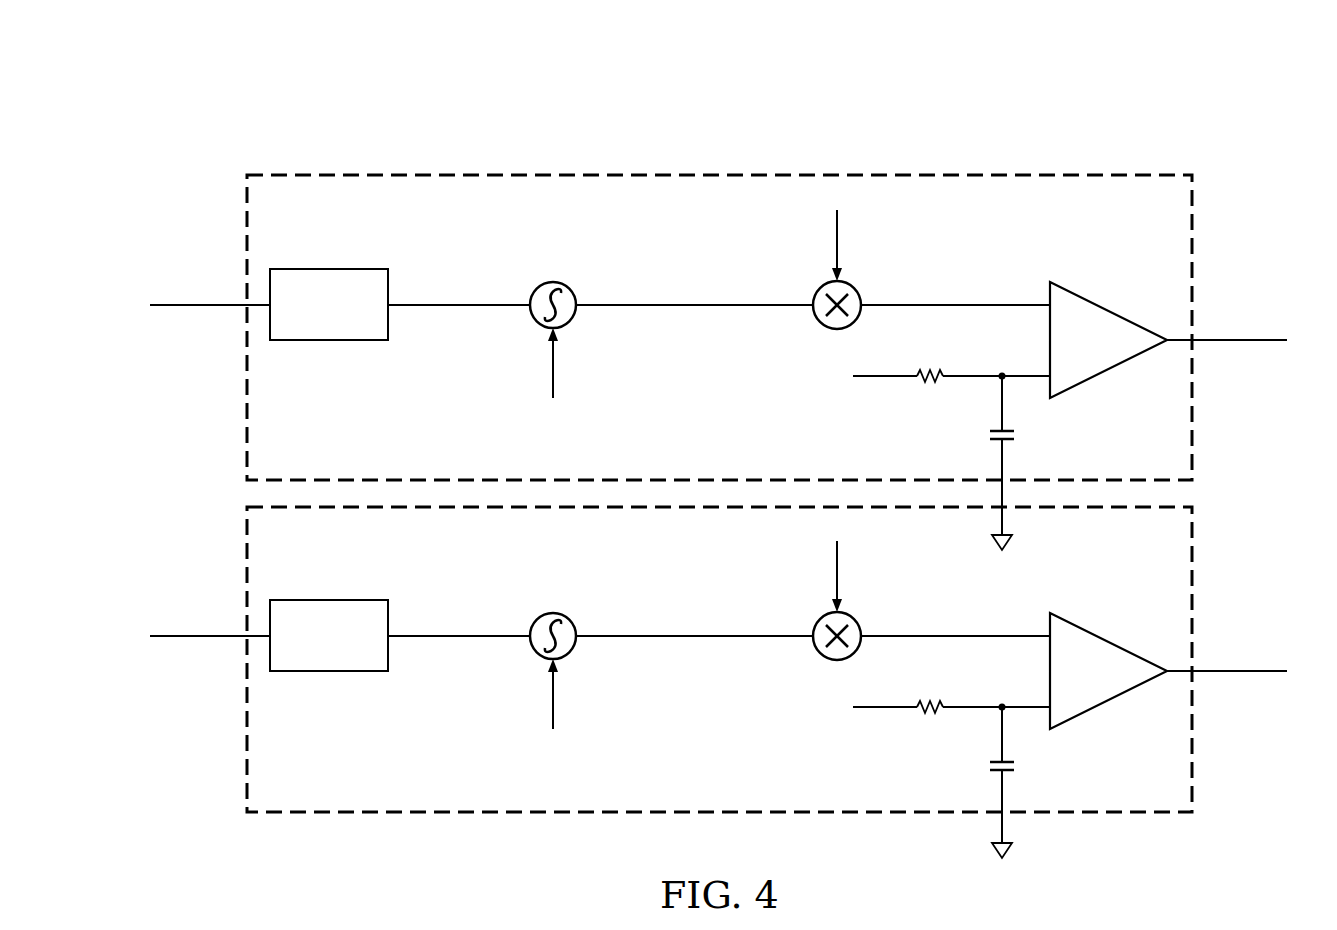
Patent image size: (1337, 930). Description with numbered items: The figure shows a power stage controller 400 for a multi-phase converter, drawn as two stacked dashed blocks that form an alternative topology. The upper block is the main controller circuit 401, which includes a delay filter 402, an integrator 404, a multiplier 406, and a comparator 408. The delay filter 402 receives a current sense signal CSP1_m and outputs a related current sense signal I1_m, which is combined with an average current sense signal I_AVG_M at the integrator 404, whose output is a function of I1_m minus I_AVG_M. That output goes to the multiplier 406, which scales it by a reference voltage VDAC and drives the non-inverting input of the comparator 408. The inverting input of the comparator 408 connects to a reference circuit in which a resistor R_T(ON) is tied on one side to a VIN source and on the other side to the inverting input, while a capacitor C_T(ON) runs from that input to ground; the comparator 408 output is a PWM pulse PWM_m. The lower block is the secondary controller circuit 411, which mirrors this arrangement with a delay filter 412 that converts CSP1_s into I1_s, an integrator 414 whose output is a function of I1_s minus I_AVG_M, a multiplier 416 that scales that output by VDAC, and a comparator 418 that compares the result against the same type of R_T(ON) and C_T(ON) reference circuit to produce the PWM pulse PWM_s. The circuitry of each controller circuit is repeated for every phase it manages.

The power stage controller 400 is at (559, 97).
The main controller circuit 401 is at (643, 167).
The delay filter 402 is at (330, 269).
The integrator 404 is at (546, 284).
The multiplier 406 is at (822, 286).
The comparator 408 is at (1122, 312).
The secondary controller circuit 411 is at (643, 491).
The delay filter 412 is at (329, 666).
The integrator 414 is at (558, 689).
The multiplier 416 is at (825, 586).
The comparator 418 is at (1108, 681).